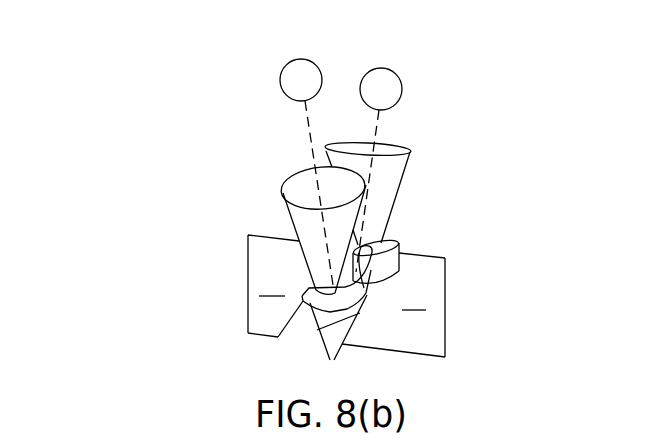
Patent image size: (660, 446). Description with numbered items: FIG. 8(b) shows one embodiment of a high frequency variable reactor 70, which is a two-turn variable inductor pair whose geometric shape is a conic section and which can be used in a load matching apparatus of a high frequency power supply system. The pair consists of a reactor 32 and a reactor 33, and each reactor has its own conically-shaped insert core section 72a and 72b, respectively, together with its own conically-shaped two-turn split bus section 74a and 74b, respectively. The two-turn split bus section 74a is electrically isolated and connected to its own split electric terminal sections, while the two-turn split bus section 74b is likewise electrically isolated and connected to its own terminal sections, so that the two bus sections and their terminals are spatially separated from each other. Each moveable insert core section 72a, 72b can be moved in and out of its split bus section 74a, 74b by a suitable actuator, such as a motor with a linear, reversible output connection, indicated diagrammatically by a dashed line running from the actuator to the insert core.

The high frequency variable reactor 70 is at (350, 235).
The reactor 32 is at (216, 280).
The reactor 33 is at (482, 193).
The conically-shaped insert core section 72a is at (307, 222).
The conically-shaped insert core section 72b is at (388, 174).
The conically-shaped two-turn split bus section 74a is at (345, 330).
The conically-shaped two-turn split bus section 74b is at (386, 282).